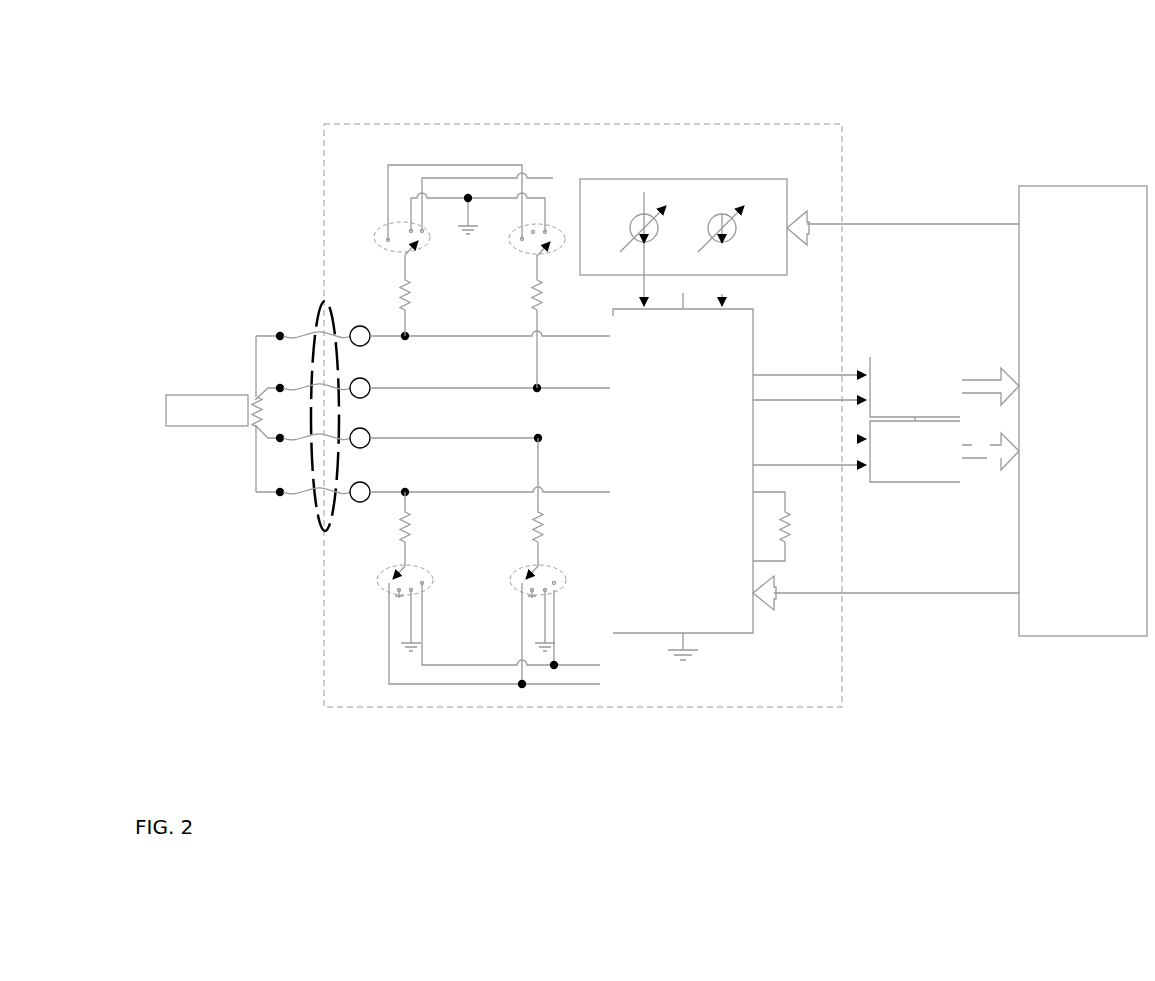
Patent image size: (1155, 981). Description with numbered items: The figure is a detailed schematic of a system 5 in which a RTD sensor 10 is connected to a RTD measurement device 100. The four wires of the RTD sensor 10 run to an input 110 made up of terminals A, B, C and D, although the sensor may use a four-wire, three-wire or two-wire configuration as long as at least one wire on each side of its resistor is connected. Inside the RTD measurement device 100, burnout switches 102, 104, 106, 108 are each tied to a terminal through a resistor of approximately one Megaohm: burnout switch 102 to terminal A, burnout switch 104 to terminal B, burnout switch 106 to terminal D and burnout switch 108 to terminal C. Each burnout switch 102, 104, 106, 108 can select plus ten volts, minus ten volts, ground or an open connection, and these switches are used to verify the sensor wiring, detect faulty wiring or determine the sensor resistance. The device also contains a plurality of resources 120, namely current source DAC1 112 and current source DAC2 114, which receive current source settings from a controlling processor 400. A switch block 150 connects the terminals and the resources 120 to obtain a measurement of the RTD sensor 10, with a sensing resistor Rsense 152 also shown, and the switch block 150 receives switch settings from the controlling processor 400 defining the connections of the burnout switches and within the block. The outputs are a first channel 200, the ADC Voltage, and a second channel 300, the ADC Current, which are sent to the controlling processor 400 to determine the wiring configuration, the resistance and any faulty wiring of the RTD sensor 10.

The system 5 is at (283, 58).
The RTD sensor 10 is at (225, 414).
The RTD measurement device 100 is at (325, 158).
The burnout switch 102 is at (414, 250).
The burnout switch 104 is at (528, 252).
The burnout switch 106 is at (380, 582).
The burnout switch 108 is at (527, 568).
The input 110 is at (317, 322).
The current source DAC1 112 is at (628, 222).
The current source DAC2 114 is at (737, 229).
The plurality of resources 120 is at (730, 179).
The switch block 150 is at (683, 476).
The sensing resistor Rsense 152 is at (793, 526).
The first channel 200 is at (915, 389).
The second channel 300 is at (915, 451).
The controlling processor 400 is at (1083, 411).